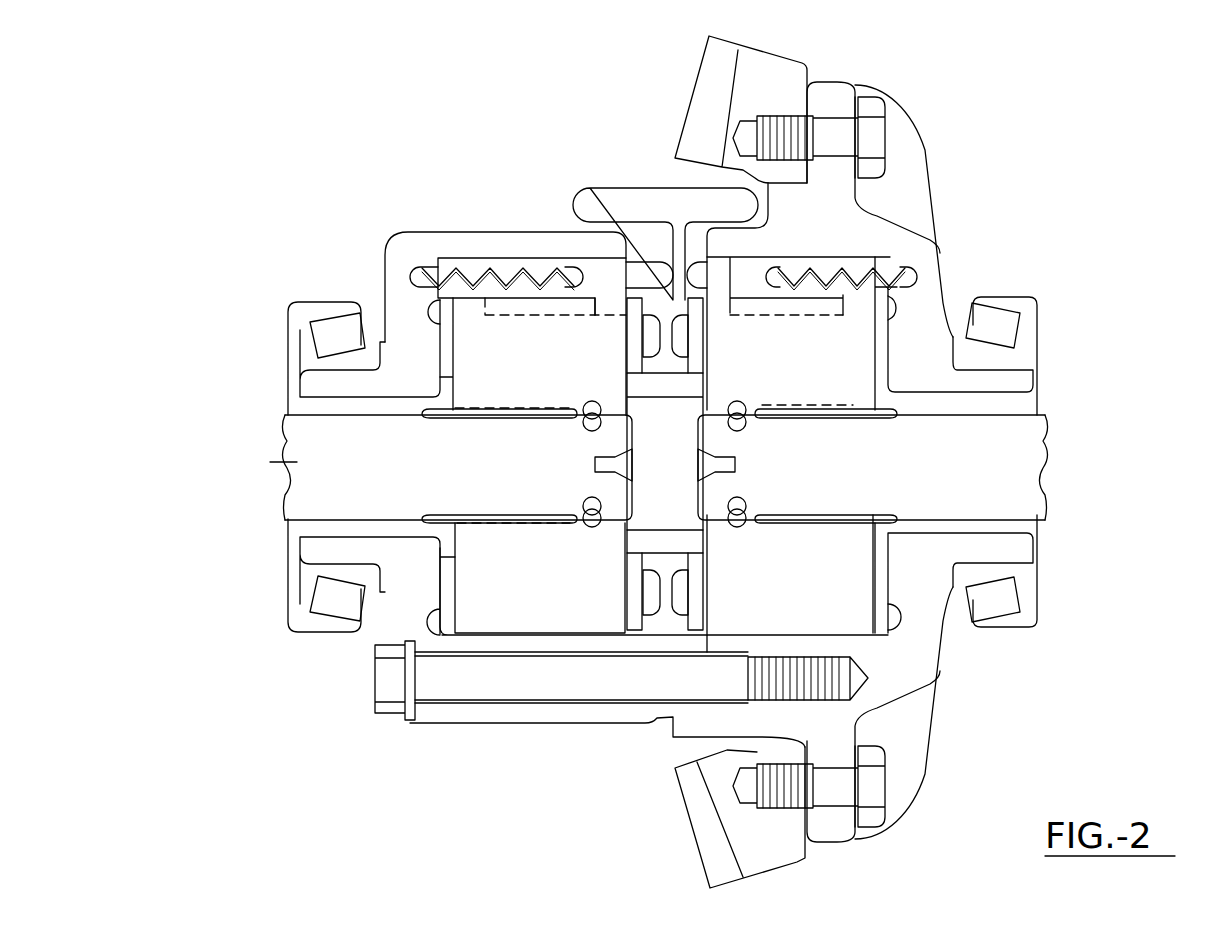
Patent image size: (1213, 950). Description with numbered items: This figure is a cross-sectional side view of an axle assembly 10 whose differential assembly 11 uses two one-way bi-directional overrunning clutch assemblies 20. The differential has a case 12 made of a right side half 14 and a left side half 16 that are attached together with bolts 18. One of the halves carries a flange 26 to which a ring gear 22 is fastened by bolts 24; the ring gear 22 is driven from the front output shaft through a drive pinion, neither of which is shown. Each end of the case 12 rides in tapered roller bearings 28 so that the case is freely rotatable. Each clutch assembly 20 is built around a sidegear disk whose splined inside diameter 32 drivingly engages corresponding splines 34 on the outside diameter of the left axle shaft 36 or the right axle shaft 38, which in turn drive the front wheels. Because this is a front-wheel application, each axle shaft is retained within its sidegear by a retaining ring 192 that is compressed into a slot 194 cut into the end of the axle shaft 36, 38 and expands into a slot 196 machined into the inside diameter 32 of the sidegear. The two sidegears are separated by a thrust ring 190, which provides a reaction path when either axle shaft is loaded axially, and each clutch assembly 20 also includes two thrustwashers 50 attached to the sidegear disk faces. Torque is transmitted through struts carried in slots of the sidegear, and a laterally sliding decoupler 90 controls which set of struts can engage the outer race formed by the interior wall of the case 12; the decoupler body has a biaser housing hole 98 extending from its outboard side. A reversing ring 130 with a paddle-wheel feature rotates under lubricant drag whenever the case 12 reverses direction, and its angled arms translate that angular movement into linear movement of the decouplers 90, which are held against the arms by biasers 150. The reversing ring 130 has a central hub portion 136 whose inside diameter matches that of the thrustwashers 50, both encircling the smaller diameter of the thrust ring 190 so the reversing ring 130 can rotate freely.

The axle assembly 10 is at (268, 172).
The differential assembly 11 is at (478, 228).
The case 12 is at (860, 612).
The right side half 14 is at (1030, 270).
The left side half 16 is at (400, 300).
The bolts 18 is at (390, 715).
The one-way bi-directional overrunning clutch assembly 20 is at (856, 396).
The ring gear 22 is at (771, 60).
The bolts 24 is at (885, 138).
The flange 26 is at (837, 82).
The tapered roller bearings 28 is at (320, 347).
The splined inside diameter 32 is at (470, 517).
The splines 34 is at (448, 417).
The left axle shaft 36 is at (293, 467).
The right axle shaft 38 is at (1037, 457).
The thrustwashers 50 is at (633, 338).
The decoupler 90 is at (600, 267).
The biaser housing hole 98 is at (452, 267).
The reversing ring 130 is at (628, 190).
The hub portion 136 is at (662, 368).
The biasers 150 is at (857, 268).
The thrust ring 190 is at (632, 543).
The retaining ring 192 is at (746, 517).
The slot 194 is at (747, 506).
The slot 196 is at (596, 514).